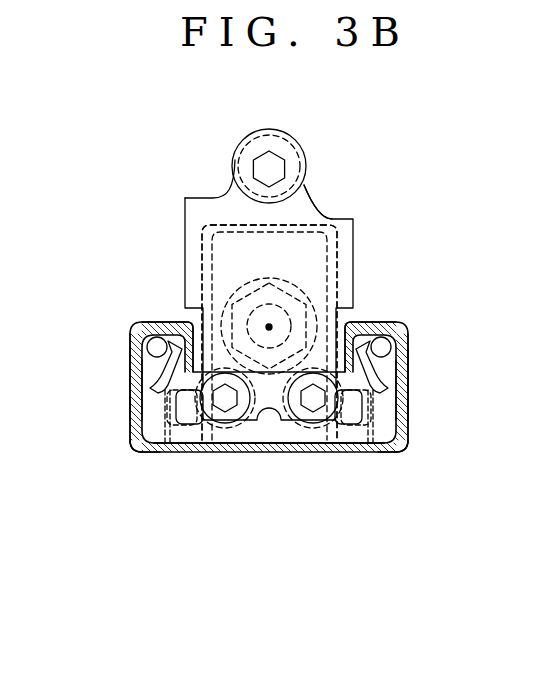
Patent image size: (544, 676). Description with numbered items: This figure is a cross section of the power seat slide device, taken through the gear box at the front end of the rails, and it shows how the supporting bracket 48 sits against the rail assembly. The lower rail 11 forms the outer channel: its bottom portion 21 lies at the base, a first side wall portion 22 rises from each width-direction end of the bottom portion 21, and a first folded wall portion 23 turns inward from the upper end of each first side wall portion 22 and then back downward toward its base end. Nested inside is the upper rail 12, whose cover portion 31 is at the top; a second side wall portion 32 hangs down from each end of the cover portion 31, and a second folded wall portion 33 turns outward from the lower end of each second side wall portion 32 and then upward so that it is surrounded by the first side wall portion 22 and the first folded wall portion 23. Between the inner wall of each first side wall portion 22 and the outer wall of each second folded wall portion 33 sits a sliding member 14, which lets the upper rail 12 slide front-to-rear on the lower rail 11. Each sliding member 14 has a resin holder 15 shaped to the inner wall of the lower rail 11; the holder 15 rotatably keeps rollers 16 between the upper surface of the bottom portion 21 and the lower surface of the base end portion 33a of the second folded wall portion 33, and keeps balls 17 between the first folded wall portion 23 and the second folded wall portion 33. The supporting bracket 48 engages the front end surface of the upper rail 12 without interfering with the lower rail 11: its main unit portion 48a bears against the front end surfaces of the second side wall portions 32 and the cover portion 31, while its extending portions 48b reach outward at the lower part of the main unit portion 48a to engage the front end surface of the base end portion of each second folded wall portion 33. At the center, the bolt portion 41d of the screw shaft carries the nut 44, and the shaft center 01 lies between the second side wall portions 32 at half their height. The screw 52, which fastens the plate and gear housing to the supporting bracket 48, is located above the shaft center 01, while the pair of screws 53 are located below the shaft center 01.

The lower rail 11 is at (283, 452).
The upper rail 12 is at (333, 263).
The sliding member 14 is at (140, 424).
The holder 15 is at (140, 447).
The roller 16 is at (170, 445).
The ball 17 is at (140, 337).
The bottom portion 21 is at (356, 440).
The first side wall portion 22 is at (133, 365).
The first folded wall portion 23 is at (148, 324).
The cover portion 31 is at (282, 224).
The second side wall portion 32 is at (184, 300).
The second folded wall portion 33 is at (143, 395).
The base end portion 33a is at (184, 440).
The bolt portion 41d is at (249, 292).
The nut 44 is at (333, 280).
The supporting bracket 48 is at (307, 182).
The main unit portion 48a is at (323, 209).
The extending portion 48b is at (200, 452).
The screw 52 is at (258, 137).
The screw 53 is at (230, 445).
The shaft center 01 is at (269, 327).